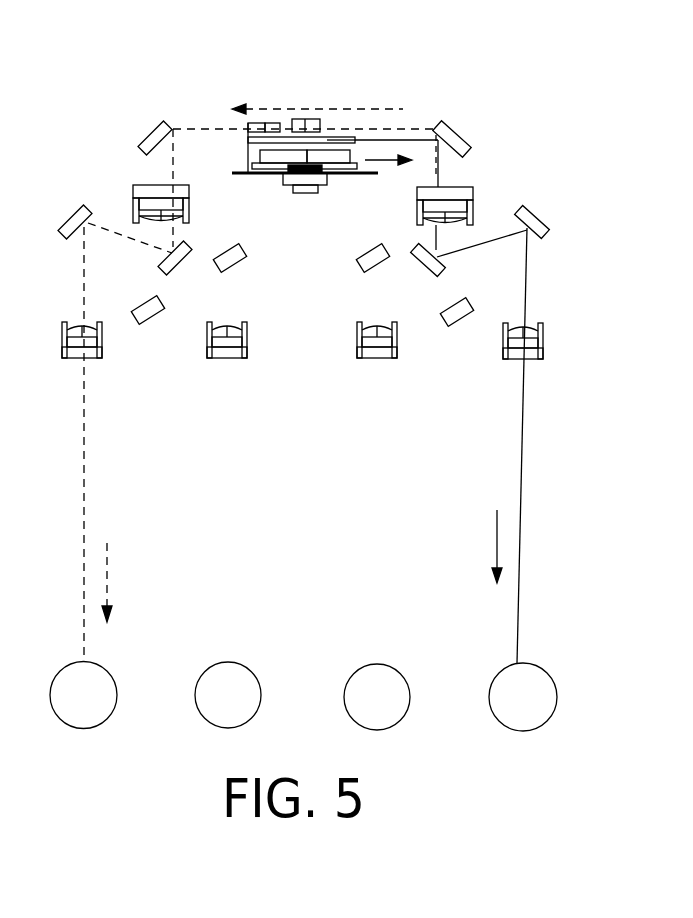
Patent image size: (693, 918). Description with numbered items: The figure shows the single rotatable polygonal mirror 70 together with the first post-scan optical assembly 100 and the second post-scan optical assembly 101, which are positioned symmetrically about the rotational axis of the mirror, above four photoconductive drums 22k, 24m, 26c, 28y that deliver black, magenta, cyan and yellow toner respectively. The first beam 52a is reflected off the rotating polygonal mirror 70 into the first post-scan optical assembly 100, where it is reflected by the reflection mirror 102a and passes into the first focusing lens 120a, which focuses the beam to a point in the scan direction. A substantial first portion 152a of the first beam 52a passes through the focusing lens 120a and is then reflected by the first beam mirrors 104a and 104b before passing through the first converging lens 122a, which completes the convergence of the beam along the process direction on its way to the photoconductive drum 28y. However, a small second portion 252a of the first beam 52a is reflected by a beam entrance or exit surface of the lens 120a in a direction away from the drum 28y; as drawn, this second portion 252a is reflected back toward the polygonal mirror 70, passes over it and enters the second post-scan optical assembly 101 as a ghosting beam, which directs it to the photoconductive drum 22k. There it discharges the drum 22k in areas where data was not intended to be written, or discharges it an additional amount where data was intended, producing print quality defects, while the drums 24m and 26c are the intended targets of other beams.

The rotatable polygonal mirror 70 is at (335, 137).
The first beam 52a is at (383, 138).
The second portion of the first beam 252a is at (418, 128).
The second post-scan optical assembly 101 is at (110, 165).
The reflection mirror 102a is at (457, 125).
The first F-1 lens 120a is at (474, 187).
The first post-scan optical assembly 100 is at (530, 181).
The first beam mirror 104a is at (420, 265).
The first beam mirror 104b is at (544, 214).
The first F-2 lens 122a is at (543, 338).
The first portion of the first beam 152a is at (522, 458).
The photoconductive drum 22k is at (112, 675).
The photoconductive drum 24m is at (242, 665).
The photoconductive drum 26c is at (393, 668).
The photoconductive drum 28y is at (542, 668).